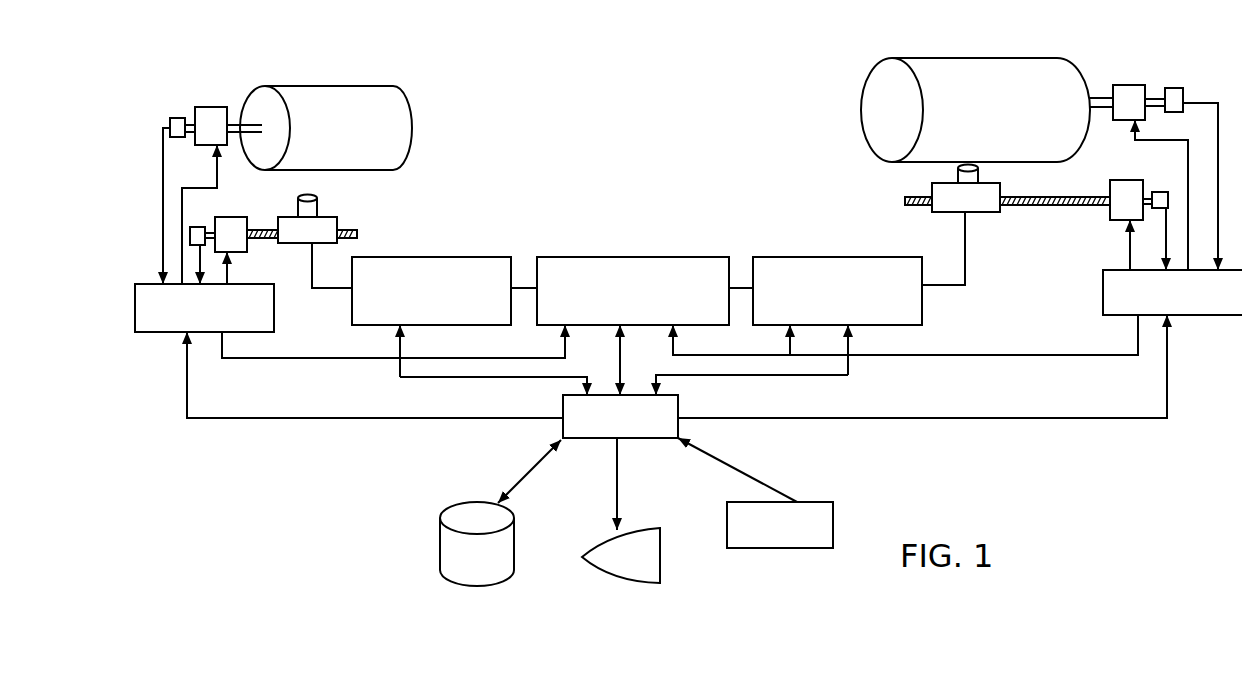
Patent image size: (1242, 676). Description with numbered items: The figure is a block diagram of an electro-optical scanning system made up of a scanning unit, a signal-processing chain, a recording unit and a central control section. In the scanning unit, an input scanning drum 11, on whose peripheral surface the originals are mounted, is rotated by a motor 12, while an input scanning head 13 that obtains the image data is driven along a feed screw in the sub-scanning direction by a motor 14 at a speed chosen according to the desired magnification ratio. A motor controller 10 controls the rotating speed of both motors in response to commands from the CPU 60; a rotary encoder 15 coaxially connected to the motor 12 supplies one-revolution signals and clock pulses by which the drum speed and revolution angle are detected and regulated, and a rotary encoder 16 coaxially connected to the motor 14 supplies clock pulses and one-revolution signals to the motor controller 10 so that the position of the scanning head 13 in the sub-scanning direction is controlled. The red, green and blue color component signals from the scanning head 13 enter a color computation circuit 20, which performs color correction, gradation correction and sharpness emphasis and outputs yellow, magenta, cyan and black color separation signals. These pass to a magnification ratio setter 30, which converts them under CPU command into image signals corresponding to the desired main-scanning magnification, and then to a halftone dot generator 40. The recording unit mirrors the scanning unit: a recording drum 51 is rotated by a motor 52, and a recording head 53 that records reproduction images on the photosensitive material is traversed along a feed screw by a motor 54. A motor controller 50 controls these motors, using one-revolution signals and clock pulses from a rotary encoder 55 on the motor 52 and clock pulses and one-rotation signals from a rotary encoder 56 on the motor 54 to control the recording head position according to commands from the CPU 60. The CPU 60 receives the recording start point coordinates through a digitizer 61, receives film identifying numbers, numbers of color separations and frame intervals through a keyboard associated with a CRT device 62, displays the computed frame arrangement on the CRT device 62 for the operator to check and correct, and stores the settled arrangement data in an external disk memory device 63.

The motor controller 10 is at (172, 334).
The input scanning drum 11 is at (397, 100).
The motor 12 is at (210, 107).
The input scanning head 13 is at (297, 241).
The motor 14 is at (232, 217).
The rotary encoder 15 is at (175, 118).
The rotary encoder 16 is at (198, 227).
The color computation circuit 20 is at (443, 257).
The magnification ratio setter 30 is at (638, 257).
The halftone dot generator 40 is at (858, 257).
The motor controller 50 is at (1223, 315).
The recording drum 51 is at (1072, 72).
The motor 52 is at (1138, 85).
The recording head 53 is at (1000, 212).
The motor 54 is at (1123, 180).
The rotary encoder 55 is at (1186, 90).
The rotary encoder 56 is at (1158, 192).
The CPU 60 is at (647, 439).
The digitizer 61 is at (757, 548).
The CRT device 62 is at (637, 586).
The disk memory device 63 is at (485, 576).